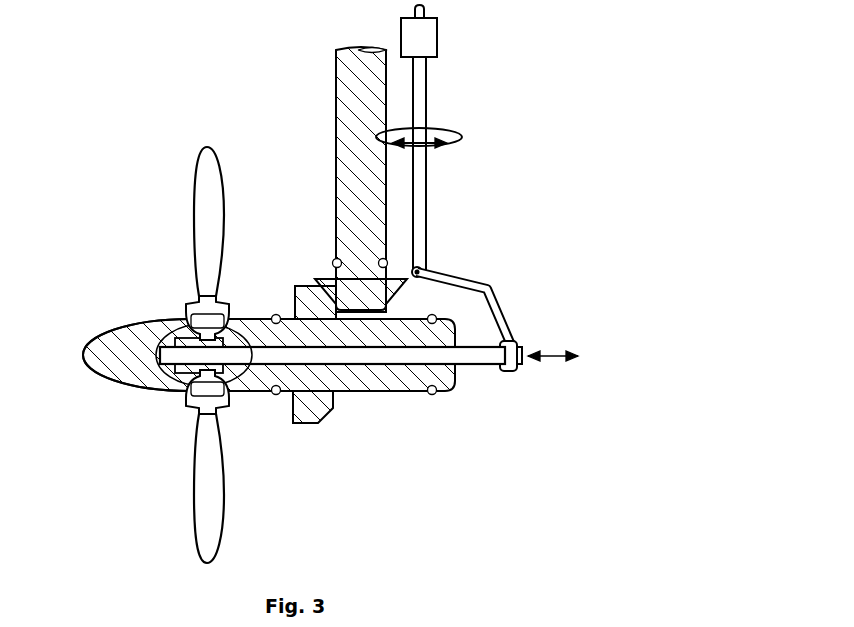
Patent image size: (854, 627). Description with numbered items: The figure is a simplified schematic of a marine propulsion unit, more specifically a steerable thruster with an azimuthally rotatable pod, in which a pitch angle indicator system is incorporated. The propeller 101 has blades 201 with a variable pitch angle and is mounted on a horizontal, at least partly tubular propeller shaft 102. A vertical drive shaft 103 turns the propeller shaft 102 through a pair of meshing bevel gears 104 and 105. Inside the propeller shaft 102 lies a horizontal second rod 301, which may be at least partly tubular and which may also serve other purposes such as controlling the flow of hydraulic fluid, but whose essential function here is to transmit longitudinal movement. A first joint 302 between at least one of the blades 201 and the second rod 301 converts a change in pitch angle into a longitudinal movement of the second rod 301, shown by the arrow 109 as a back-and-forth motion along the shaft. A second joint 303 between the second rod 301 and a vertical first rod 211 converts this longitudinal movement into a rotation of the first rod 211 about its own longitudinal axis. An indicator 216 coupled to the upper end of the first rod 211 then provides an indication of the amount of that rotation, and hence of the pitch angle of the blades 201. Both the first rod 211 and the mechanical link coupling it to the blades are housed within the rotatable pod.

The propeller 101 is at (137, 325).
The propeller shaft 102 is at (372, 392).
The vertical drive shaft 103 is at (336, 186).
The bevel gear 104 is at (323, 282).
The bevel gear 105 is at (295, 290).
The arrow 109 is at (555, 362).
The blades 201 is at (198, 184).
The first rod 211 is at (426, 197).
The indicator 216 is at (420, 46).
The second rod 301 is at (470, 362).
The first joint 302 is at (143, 385).
The second joint 303 is at (440, 233).